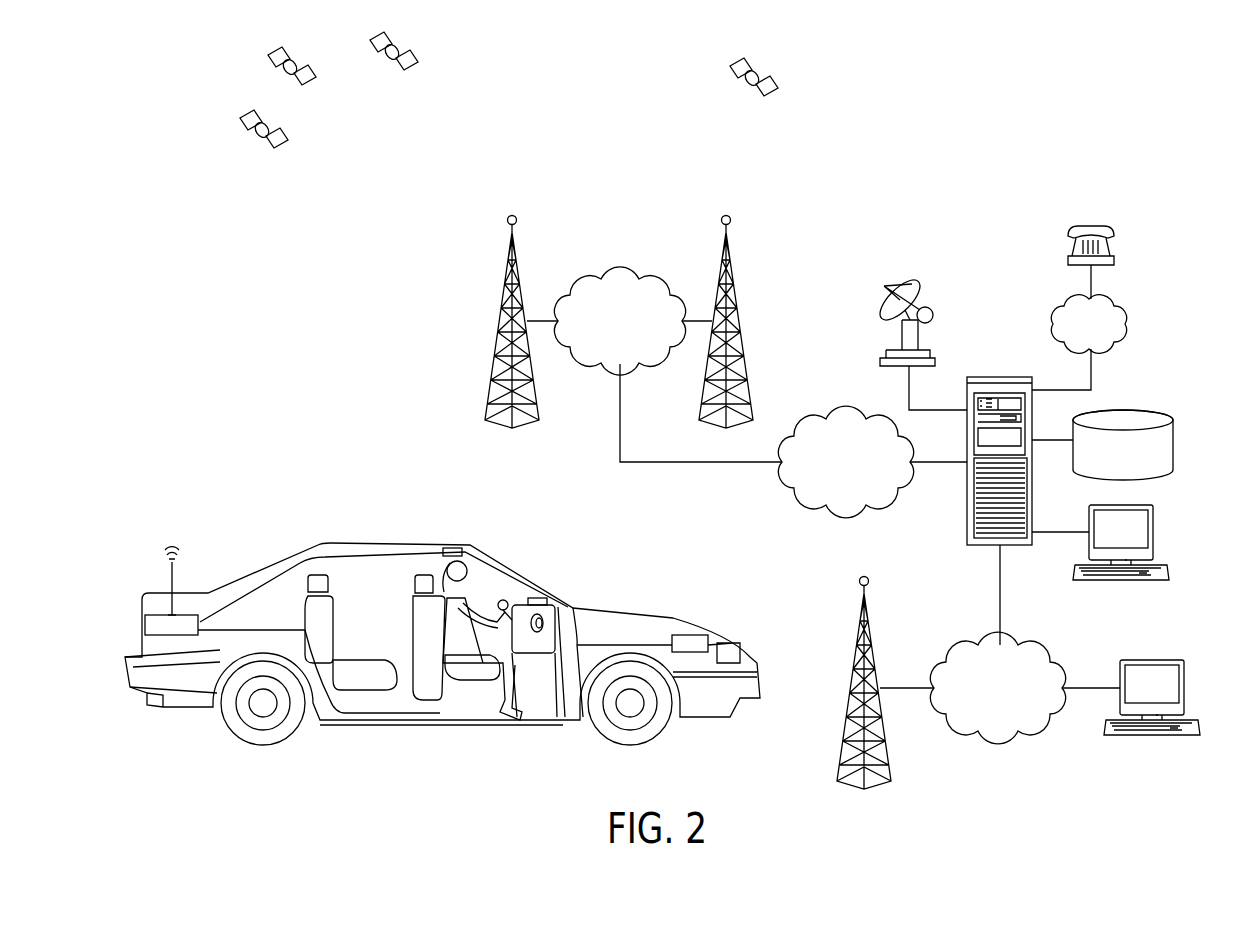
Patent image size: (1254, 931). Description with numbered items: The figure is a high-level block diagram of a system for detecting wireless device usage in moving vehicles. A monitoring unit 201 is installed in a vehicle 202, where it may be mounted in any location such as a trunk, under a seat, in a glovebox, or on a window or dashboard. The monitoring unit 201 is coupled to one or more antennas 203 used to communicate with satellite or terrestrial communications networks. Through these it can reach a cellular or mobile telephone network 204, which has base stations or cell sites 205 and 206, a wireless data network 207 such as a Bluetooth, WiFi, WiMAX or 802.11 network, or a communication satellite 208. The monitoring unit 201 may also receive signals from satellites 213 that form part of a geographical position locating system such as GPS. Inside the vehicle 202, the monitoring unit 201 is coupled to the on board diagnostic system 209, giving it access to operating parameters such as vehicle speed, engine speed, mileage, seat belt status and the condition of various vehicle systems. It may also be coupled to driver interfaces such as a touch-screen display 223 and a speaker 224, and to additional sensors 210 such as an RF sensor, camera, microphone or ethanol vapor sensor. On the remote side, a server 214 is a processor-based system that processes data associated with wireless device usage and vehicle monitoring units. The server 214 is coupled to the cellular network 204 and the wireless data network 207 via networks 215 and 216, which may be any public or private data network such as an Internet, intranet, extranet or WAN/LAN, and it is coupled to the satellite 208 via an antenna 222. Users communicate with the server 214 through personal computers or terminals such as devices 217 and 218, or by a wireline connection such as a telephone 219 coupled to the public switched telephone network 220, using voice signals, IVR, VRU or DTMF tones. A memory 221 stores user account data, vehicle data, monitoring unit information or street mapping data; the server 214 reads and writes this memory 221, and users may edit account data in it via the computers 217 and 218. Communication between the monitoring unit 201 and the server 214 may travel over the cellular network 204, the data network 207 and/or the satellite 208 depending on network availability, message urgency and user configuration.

The monitoring unit 201 is at (145, 622).
The vehicle 202 is at (330, 733).
The antennas 203 is at (168, 570).
The cellular or mobile telephone network 204 is at (620, 276).
The base station or cell site 205 is at (496, 316).
The base station or cell site 206 is at (744, 318).
The wireless data network 207 is at (848, 680).
The satellite 208 is at (736, 84).
The on board diagnostic system 209 is at (697, 635).
The additional sensors 210 is at (463, 552).
The satellites 213 is at (278, 70).
The server 214 is at (1006, 377).
The network 215 is at (846, 416).
The network 216 is at (1020, 735).
The device 217 is at (1156, 530).
The device 218 is at (1168, 660).
The telephone 219 is at (1117, 254).
The public switched telephone network 220 is at (1128, 326).
The memory 221 is at (1175, 436).
The antenna 222 is at (938, 314).
The touch-screen display 223 is at (540, 598).
The speaker 224 is at (536, 632).